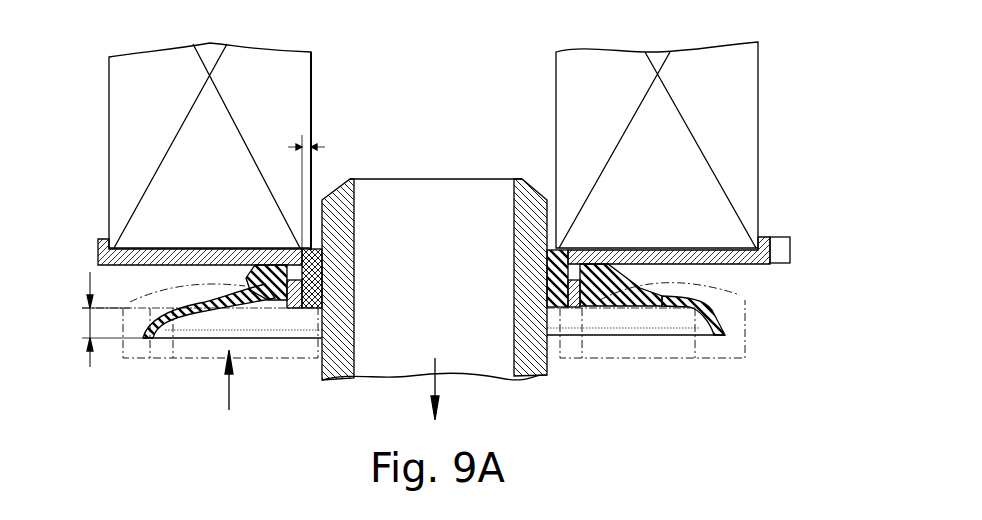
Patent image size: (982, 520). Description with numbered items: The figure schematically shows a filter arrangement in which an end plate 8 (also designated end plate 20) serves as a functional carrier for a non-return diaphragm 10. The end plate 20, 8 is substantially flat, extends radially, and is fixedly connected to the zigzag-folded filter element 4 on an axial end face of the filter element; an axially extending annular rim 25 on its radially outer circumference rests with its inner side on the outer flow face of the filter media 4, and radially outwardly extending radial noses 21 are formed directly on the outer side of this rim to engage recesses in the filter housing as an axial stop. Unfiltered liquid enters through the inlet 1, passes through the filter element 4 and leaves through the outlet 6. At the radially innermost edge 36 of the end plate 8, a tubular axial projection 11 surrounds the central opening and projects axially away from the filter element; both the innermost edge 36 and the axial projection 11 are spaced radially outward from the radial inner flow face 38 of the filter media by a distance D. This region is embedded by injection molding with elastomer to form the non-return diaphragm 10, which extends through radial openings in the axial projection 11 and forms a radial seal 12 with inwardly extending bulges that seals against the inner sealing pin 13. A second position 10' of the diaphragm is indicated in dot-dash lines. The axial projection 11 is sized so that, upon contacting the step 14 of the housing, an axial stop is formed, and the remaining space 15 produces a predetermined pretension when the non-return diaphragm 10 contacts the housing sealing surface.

The inlet 1 is at (229, 410).
The filter element 4 is at (312, 125).
The outlet 6 is at (432, 409).
The end plate 8 is at (196, 248).
The non-return diaphragm 10 is at (446, 317).
The sealing lip in undeformed position 10' is at (472, 298).
The axial projection 11 is at (296, 310).
The radial seal 12 is at (323, 300).
The inner sealing pin 13 is at (527, 355).
The step 14 is at (150, 362).
The remaining space 15 is at (90, 325).
The end plate 20 is at (735, 264).
The radial noses 21 is at (790, 250).
The annular rim 25 is at (98, 243).
The radially innermost edge 36 is at (303, 256).
The radial inner flow face 38 is at (312, 177).